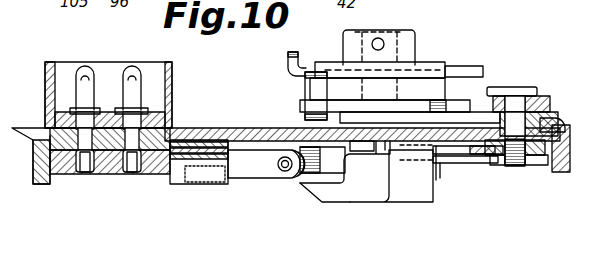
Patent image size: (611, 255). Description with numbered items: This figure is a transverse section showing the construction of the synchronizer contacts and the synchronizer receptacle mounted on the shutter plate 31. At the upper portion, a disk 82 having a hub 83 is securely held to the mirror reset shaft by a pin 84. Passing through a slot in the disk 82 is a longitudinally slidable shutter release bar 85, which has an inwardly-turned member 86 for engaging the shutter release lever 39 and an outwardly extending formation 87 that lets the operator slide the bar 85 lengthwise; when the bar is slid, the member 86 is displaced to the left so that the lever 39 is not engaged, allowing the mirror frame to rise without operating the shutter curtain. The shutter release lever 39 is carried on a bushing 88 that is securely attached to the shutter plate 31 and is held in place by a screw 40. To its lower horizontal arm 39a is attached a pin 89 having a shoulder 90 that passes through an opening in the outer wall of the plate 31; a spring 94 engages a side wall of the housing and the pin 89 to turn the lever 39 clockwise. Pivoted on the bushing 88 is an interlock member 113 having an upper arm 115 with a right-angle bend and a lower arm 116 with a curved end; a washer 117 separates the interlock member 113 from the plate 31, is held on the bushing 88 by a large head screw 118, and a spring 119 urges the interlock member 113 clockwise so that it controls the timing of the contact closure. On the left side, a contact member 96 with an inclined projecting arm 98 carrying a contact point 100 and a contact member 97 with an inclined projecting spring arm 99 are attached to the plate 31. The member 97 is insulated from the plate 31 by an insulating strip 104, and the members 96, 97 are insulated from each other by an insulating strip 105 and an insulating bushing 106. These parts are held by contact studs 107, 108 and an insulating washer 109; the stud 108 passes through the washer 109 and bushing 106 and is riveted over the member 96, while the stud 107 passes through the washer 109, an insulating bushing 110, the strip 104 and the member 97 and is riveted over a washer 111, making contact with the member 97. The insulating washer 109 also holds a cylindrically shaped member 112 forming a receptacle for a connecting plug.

The shutter plate 31 is at (570, 152).
The shutter release lever 39 is at (550, 102).
The horizontal arm 39a is at (438, 100).
The screw 40 is at (520, 96).
The disk 82 is at (440, 62).
The hub 83 is at (412, 46).
The pin 84 is at (378, 38).
The shutter release bar 85 is at (475, 66).
The inwardly-turned member 86 is at (318, 90).
The outwardly extending formation 87 is at (288, 60).
The bushing 88 is at (558, 116).
The pin 89 is at (322, 159).
The shoulder 90 is at (385, 150).
The spring 94 is at (563, 128).
The contact member 96 is at (178, 184).
The contact member 97 is at (208, 142).
The inclined projecting arm 98 is at (262, 180).
The inclined projecting spring arm 99 is at (300, 178).
The contact point 100 is at (278, 164).
The insulating strip 104 is at (225, 128).
The insulating strip 105 is at (150, 170).
The insulating bushing 106 is at (100, 172).
The contact stud 107 is at (85, 68).
The contact stud 108 is at (132, 68).
The insulating washer 109 is at (166, 110).
The insulating bushing 110 is at (30, 153).
The washer 111 is at (58, 176).
The cylindrically shaped member 112 is at (172, 82).
The interlock member 113 is at (480, 163).
The upper arm 115 is at (372, 188).
The lower arm 116 is at (343, 172).
The washer 117 is at (452, 154).
The large head screw 118 is at (530, 165).
The spring 119 is at (450, 178).